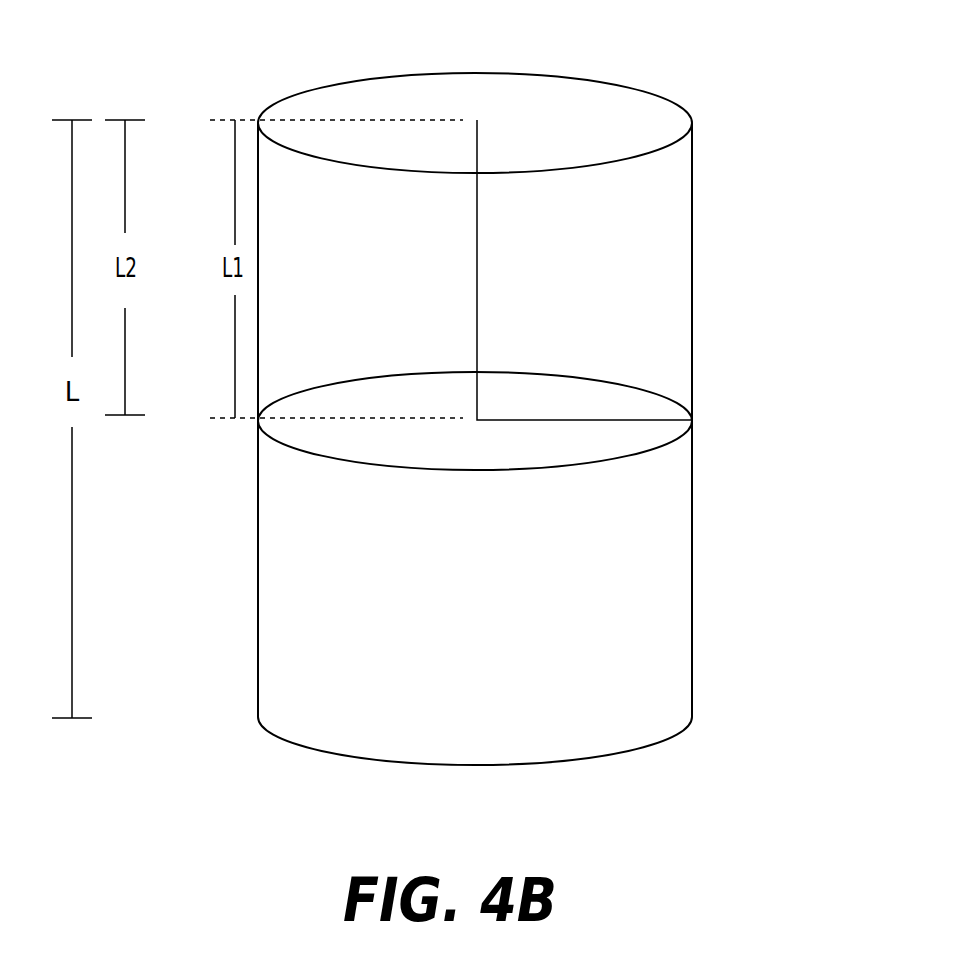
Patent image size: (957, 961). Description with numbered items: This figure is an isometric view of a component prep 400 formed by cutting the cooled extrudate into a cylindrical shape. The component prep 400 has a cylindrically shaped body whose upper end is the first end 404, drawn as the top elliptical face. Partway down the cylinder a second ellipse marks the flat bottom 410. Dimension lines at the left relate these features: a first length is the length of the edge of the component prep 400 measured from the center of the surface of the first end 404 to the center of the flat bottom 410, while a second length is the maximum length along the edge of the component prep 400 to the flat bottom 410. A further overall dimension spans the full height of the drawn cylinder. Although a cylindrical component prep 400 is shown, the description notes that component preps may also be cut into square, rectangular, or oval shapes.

The component prep 400 is at (565, 386).
The first end 404 is at (580, 98).
The flat bottom 410 is at (698, 415).